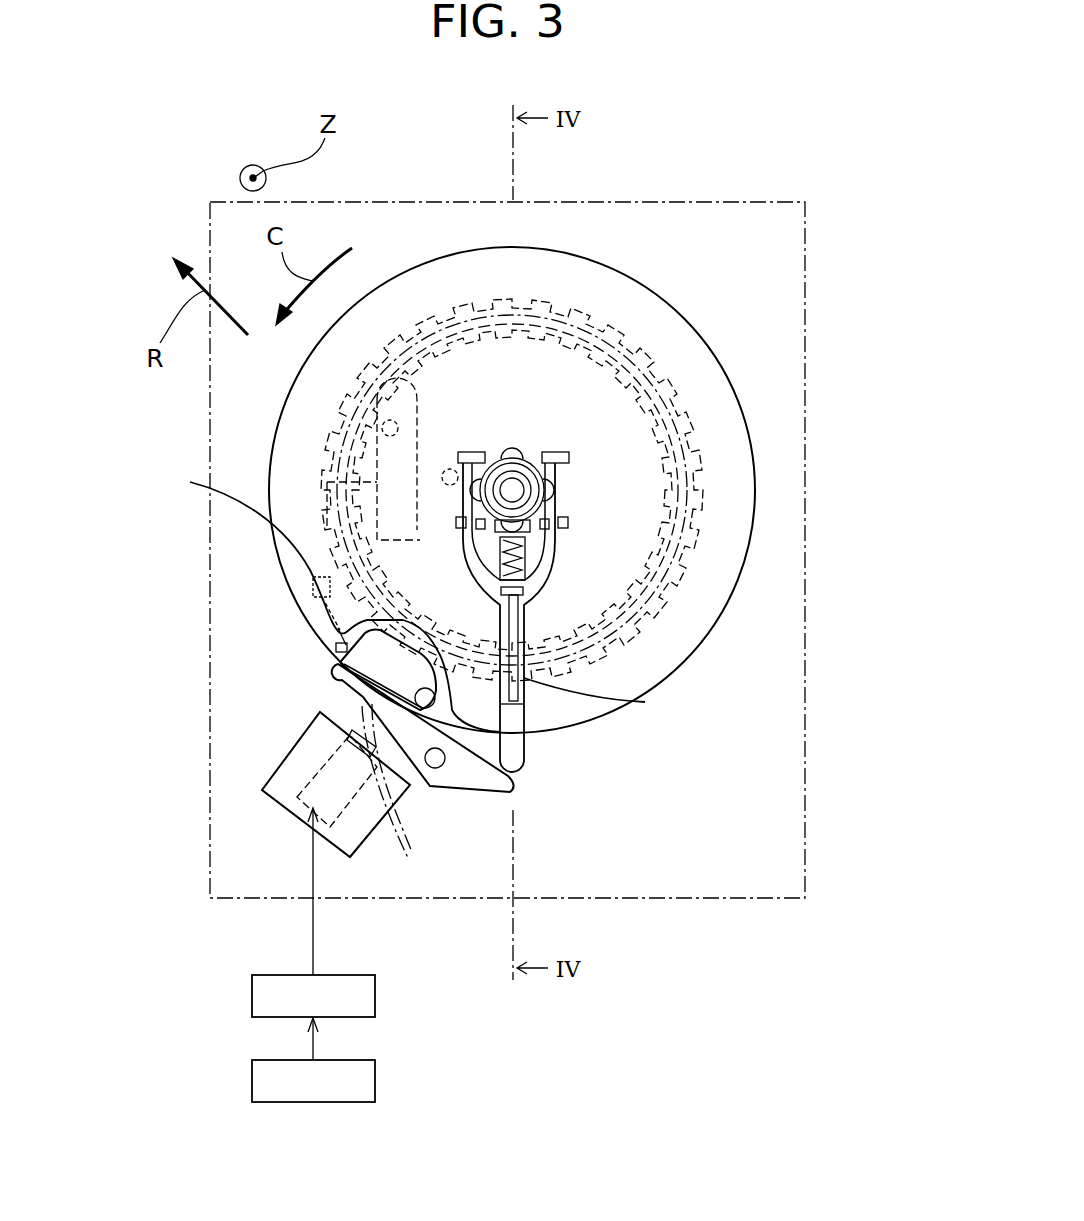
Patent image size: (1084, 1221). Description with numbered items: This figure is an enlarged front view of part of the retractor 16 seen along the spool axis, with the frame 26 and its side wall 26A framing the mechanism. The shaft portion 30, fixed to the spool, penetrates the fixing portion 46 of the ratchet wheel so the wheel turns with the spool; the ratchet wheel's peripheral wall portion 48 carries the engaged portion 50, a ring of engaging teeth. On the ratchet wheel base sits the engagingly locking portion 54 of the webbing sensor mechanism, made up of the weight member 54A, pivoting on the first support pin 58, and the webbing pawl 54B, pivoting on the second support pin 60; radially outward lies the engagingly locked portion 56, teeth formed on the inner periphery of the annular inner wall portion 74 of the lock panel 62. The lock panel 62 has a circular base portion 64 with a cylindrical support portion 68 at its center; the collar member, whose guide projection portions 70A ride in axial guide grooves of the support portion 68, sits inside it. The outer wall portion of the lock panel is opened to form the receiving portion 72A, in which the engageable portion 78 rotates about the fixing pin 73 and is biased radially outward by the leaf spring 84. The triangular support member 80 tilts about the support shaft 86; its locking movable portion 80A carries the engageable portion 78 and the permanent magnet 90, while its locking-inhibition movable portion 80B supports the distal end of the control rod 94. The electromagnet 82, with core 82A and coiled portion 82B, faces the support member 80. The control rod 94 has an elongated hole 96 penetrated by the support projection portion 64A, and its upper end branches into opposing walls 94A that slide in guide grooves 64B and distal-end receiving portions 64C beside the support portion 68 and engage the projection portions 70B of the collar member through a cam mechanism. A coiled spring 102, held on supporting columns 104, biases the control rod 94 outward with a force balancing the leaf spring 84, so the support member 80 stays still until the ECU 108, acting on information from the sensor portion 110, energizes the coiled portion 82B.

The retractor 16 is at (185, 927).
The frame 26 is at (205, 580).
The side wall 26A is at (208, 790).
The shaft portion 30 is at (562, 488).
The fixing portion 46 is at (560, 462).
The peripheral wall portion 48 is at (700, 420).
The engaged portion 50 is at (700, 470).
The engagingly locking portion 54 is at (503, 372).
The weight member 54A is at (417, 430).
The webbing pawl 54B is at (327, 482).
The engagingly locked portion 56 is at (630, 355).
The first support pin 58 is at (450, 468).
The second support pin 60 is at (382, 415).
The lock panel 62 is at (740, 615).
The base portion 64 is at (655, 650).
The support projection portion 64A is at (555, 665).
The guide groove 64B is at (570, 522).
The distal-end receiving portion 64C is at (535, 460).
The support portion 68 is at (540, 458).
The guide projection portion 70A is at (528, 458).
The projection portion 70B is at (667, 420).
The receiving portion 72A is at (310, 570).
The fixing pin 73 is at (435, 698).
The inner wall portion 74 is at (557, 325).
The engageable portion 78 is at (342, 656).
The support member 80 is at (472, 795).
The locking movable portion 80A is at (338, 675).
The locking-inhibition movable portion 80B is at (520, 790).
The electromagnet 82 is at (286, 815).
The core 82A is at (352, 732).
The coiled portion 82B is at (356, 830).
The leaf spring 84 is at (325, 613).
The support shaft 86 is at (434, 768).
The permanent magnet 90 is at (396, 800).
The control rod 94 is at (535, 717).
The opposing walls 94A is at (472, 528).
The elongated hole 96 is at (518, 625).
The coiled spring 102 is at (525, 556).
The supporting column 104 is at (504, 578).
The ECU 108 is at (252, 990).
The sensor portion 110 is at (252, 1080).